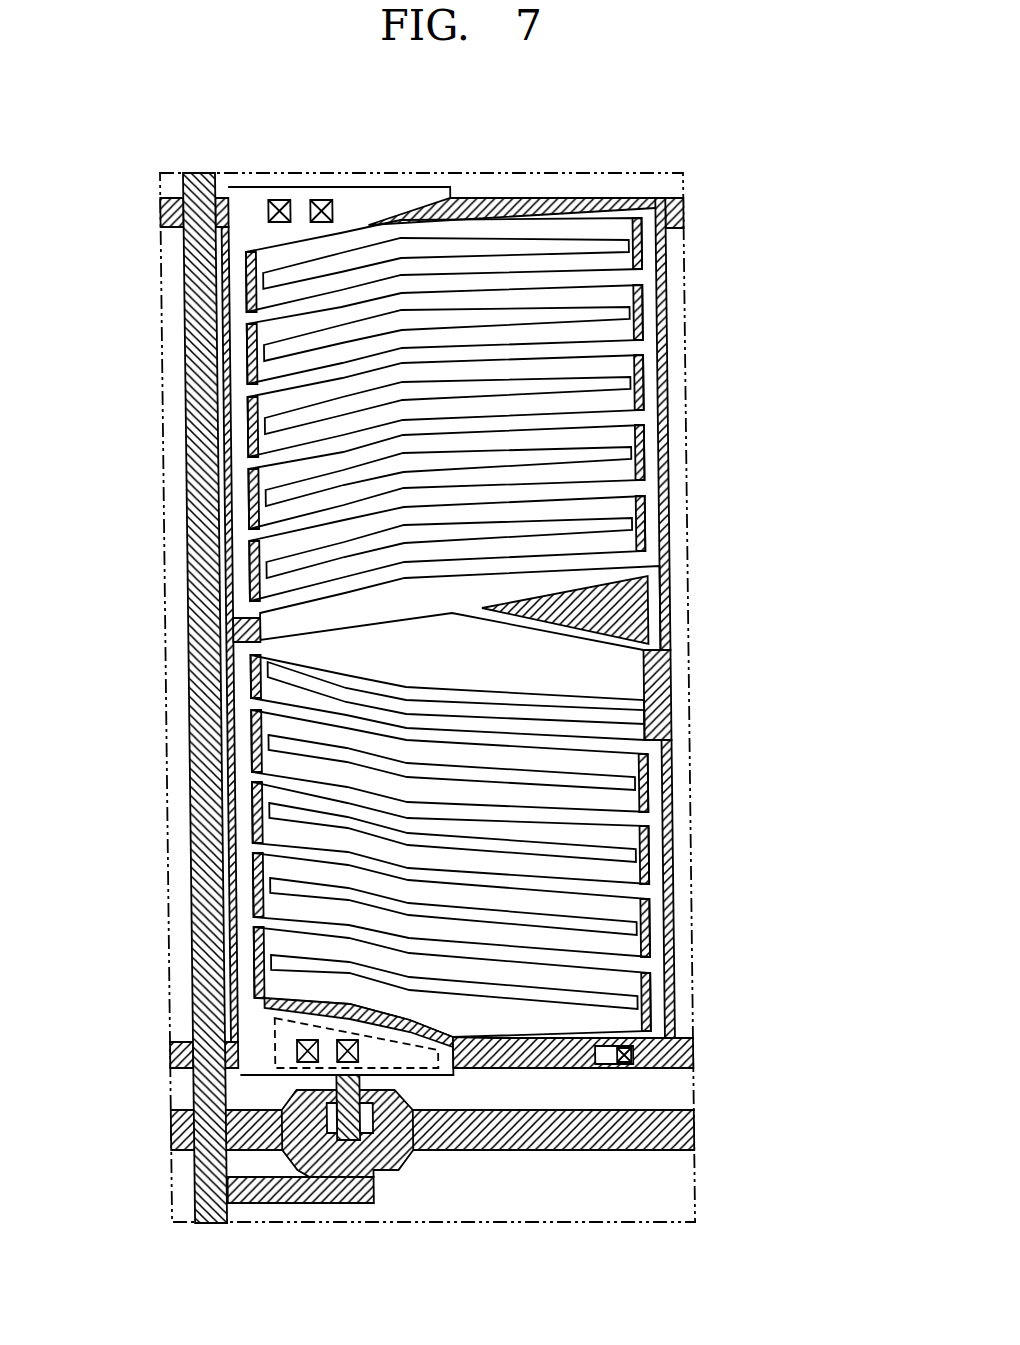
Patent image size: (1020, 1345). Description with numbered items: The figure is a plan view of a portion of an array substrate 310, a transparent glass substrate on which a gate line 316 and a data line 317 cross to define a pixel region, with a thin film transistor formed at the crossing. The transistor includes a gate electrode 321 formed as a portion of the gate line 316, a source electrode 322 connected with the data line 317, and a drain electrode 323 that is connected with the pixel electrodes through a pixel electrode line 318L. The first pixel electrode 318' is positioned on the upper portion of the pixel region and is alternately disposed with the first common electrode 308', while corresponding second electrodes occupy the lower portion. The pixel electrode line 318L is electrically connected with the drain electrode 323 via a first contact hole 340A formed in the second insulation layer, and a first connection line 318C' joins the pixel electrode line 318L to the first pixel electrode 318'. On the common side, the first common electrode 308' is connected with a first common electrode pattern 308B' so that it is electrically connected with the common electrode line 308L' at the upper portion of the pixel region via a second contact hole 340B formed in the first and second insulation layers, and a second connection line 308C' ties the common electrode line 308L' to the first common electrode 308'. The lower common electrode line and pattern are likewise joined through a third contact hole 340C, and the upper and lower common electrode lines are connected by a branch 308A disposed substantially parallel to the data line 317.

The array substrate 310 is at (693, 176).
The gate line 316 is at (693, 1127).
The data line 317 is at (205, 887).
The first pixel electrode 318' is at (503, 409).
The first connection line 318C' is at (701, 424).
The pixel electrode line 318L is at (246, 1018).
The first common electrode 308' is at (513, 408).
The branch 308A is at (668, 690).
The first common electrode pattern 308B' is at (339, 160).
The second connection line 308C' is at (174, 634).
The first common electrode line 308L' is at (565, 213).
The gate electrode 321 is at (403, 1160).
The source electrode 322 is at (367, 1207).
The drain electrode 323 is at (323, 1097).
The first contact hole 340A is at (297, 1053).
The second contact hole 340B is at (281, 199).
The third contact hole 340C is at (624, 1064).